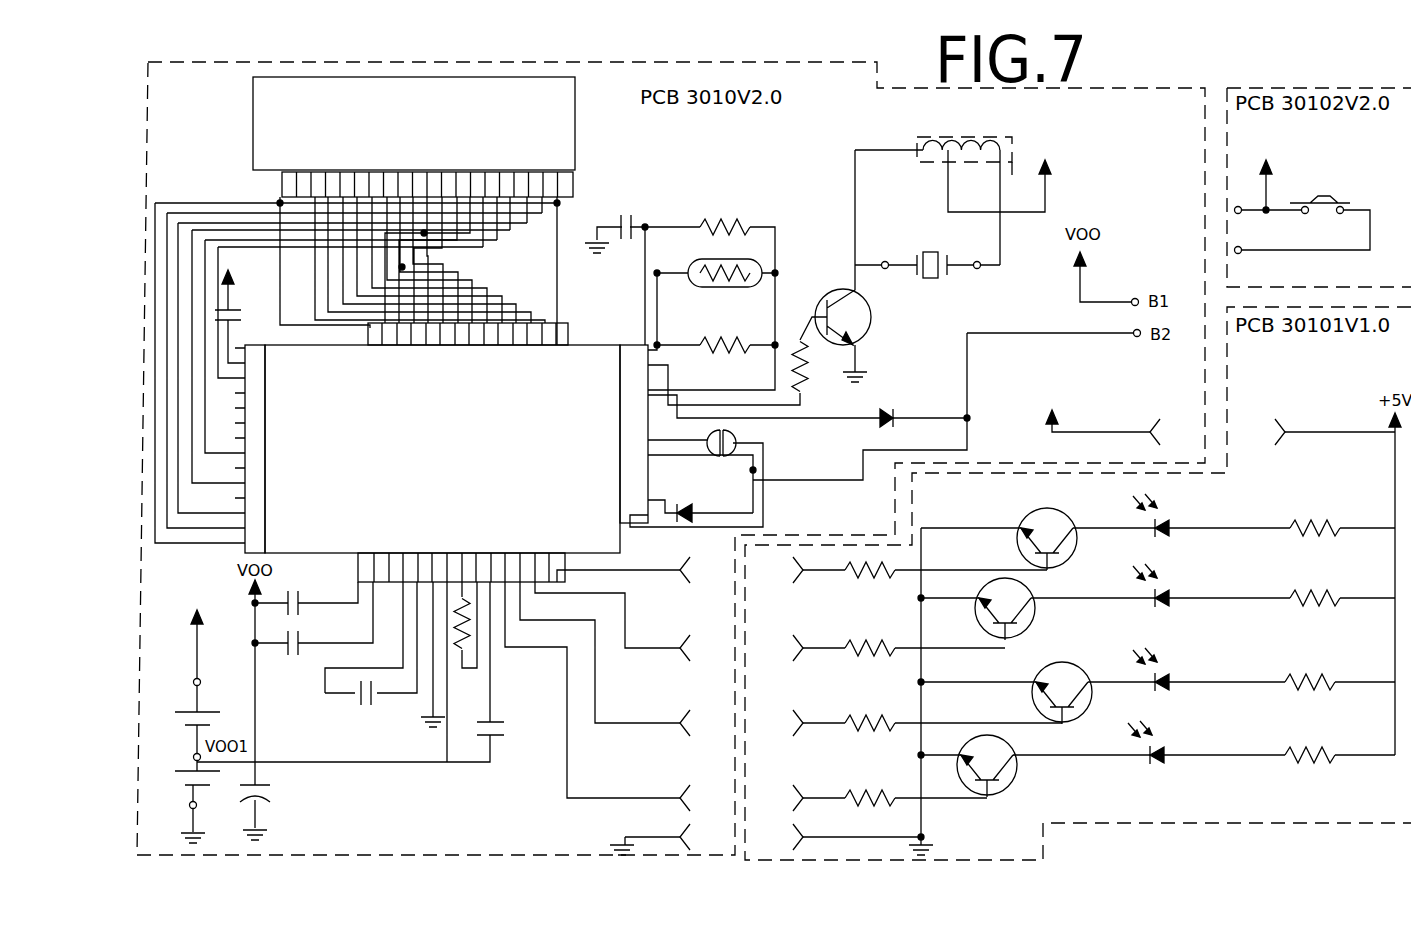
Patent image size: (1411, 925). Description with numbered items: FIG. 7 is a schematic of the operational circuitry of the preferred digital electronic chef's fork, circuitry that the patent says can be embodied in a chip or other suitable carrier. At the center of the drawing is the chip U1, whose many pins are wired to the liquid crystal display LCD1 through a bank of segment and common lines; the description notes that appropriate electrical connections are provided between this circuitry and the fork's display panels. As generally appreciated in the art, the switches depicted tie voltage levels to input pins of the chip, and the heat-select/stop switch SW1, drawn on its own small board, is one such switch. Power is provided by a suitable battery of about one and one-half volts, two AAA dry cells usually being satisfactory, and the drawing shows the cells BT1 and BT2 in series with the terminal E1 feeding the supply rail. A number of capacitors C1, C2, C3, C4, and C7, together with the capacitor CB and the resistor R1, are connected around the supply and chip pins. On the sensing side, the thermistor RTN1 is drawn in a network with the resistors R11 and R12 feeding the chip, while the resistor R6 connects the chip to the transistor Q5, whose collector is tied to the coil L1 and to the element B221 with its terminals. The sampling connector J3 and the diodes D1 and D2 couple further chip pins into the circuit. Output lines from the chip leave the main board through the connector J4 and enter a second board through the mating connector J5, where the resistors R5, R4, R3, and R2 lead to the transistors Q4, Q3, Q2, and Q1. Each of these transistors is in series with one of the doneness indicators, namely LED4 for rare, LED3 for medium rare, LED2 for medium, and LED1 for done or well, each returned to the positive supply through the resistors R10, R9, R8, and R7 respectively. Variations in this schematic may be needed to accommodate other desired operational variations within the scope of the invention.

The LCD display BU50332 LCD1 is at (414, 137).
The microcontroller SOLO500C U1 is at (446, 452).
The capacitor 0.1uF C1 is at (249, 316).
The capacitor 0.1uF C2 is at (305, 598).
The capacitor 0.1uF C3 is at (335, 649).
The capacitor 0.1uF C4 is at (375, 672).
The capacitor 10uF C7 is at (276, 808).
The capacitor 3300P CB is at (607, 273).
The resistor 10K R1 is at (465, 648).
The resistor 1K R2 is at (916, 800).
The resistor 1K R3 is at (953, 725).
The resistor 1K R4 is at (925, 650).
The resistor 1K R5 is at (946, 572).
The resistor 1K R6 is at (742, 361).
The resistor 47 R7 is at (1340, 745).
The resistor 47 R8 is at (1340, 671).
The resistor 47 R9 is at (1342, 588).
The resistor 47 R10 is at (1342, 516).
The resistor 10K 1% R11 is at (710, 235).
The resistor 75K R12 is at (713, 353).
The thermistor 204CT-1 RTN1 is at (713, 304).
The transistor Q1 is at (1042, 765).
The transistor Q2 is at (1072, 693).
The transistor Q3 is at (1050, 609).
The transistor Q4 is at (1070, 539).
The transistor 5805D Q5 is at (870, 266).
The diode 1N4148 D1 is at (702, 488).
The diode 1N4148 D2 is at (809, 406).
The coil 3P L1 is at (961, 178).
The crystal/buzzer B221 is at (927, 253).
The sample connector J3 is at (715, 472).
The connector J4 is at (847, 618).
The connector J5 is at (1072, 634).
The heat select/stop switch SW1 is at (1307, 205).
The terminal E1 is at (185, 650).
The battery BT1 is at (179, 802).
The battery BT2 is at (183, 732).
The LED done/well LED1 is at (1198, 755).
The LED medium LED2 is at (1186, 669).
The LED med rare LED3 is at (1176, 585).
The LED rare LED4 is at (1192, 515).